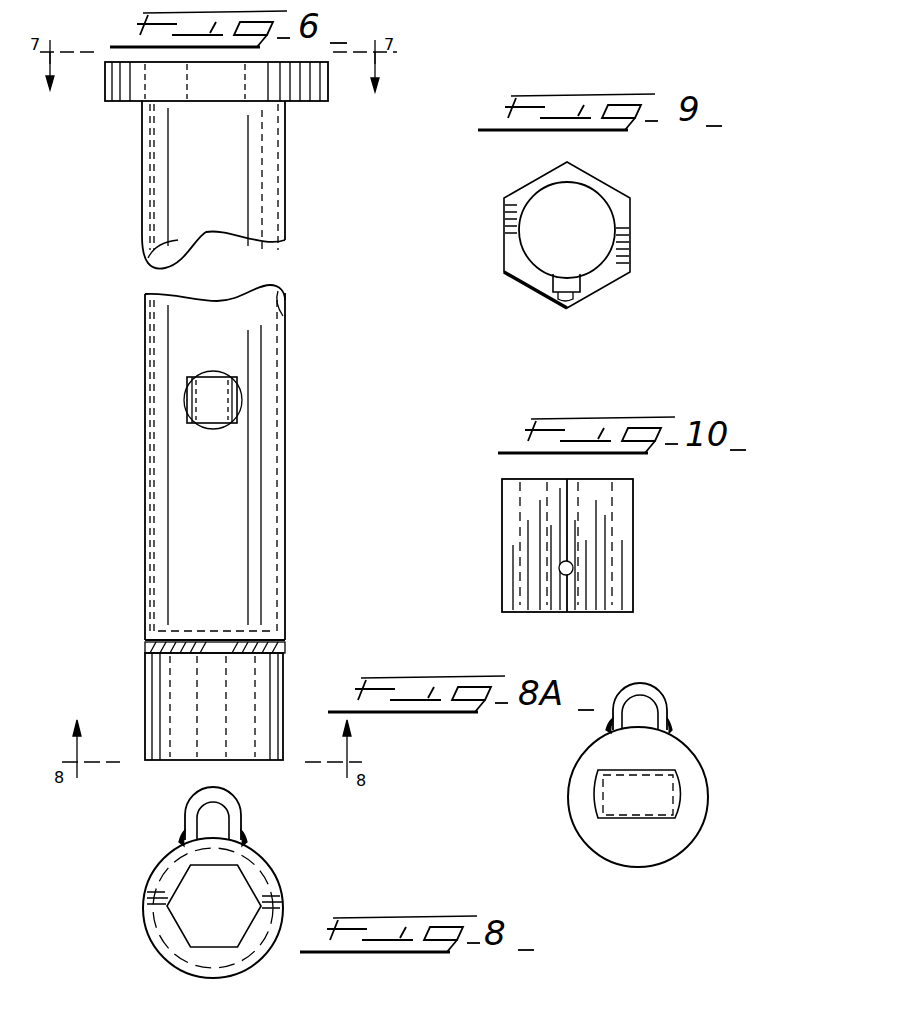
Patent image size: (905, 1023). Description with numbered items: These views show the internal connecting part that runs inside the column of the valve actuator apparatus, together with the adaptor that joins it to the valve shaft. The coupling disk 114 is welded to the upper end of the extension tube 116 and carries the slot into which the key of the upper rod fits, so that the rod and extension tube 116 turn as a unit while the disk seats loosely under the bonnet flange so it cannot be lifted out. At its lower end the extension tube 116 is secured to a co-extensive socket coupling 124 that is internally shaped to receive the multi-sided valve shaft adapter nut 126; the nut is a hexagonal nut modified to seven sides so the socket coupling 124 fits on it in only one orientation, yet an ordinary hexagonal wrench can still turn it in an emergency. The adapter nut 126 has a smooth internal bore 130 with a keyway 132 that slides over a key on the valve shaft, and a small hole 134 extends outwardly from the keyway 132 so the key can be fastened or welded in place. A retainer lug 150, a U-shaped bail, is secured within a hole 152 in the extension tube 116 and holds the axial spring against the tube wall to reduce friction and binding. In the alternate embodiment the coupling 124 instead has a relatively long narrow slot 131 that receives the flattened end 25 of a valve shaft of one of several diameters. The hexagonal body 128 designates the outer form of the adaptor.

In FIG. 6, the coupling disk 114 is at (328, 95).
In FIG. 6, the extension tube 116 is at (142, 192).
In FIG. 6, the socket coupling 124 is at (283, 685).
In FIG. 8A, the socket coupling 124 is at (673, 737).
In FIG. 8, the socket coupling 124 is at (283, 888).
In FIG. 9, the valve shaft adapter nut 126 is at (631, 210).
In FIG. 10, the valve shaft adapter nut 126 is at (633, 503).
In FIG. 9, the hexagonal body 128 is at (575, 160).
In FIG. 9, the internal bore 130 is at (540, 242).
In FIG. 8A, the slot 131 is at (683, 777).
In FIG. 9, the keyway 132 is at (582, 284).
In FIG. 9, the hole 134 is at (580, 305).
In FIG. 10, the hole 134 is at (570, 574).
In FIG. 6, the retainer lug 150 is at (195, 400).
In FIG. 8A, the retainer lug 150 is at (648, 682).
In FIG. 8, the retainer lug 150 is at (243, 810).
In FIG. 6, the hole 152 is at (222, 378).
In FIG. 8A, the flattened end 25 is at (665, 808).